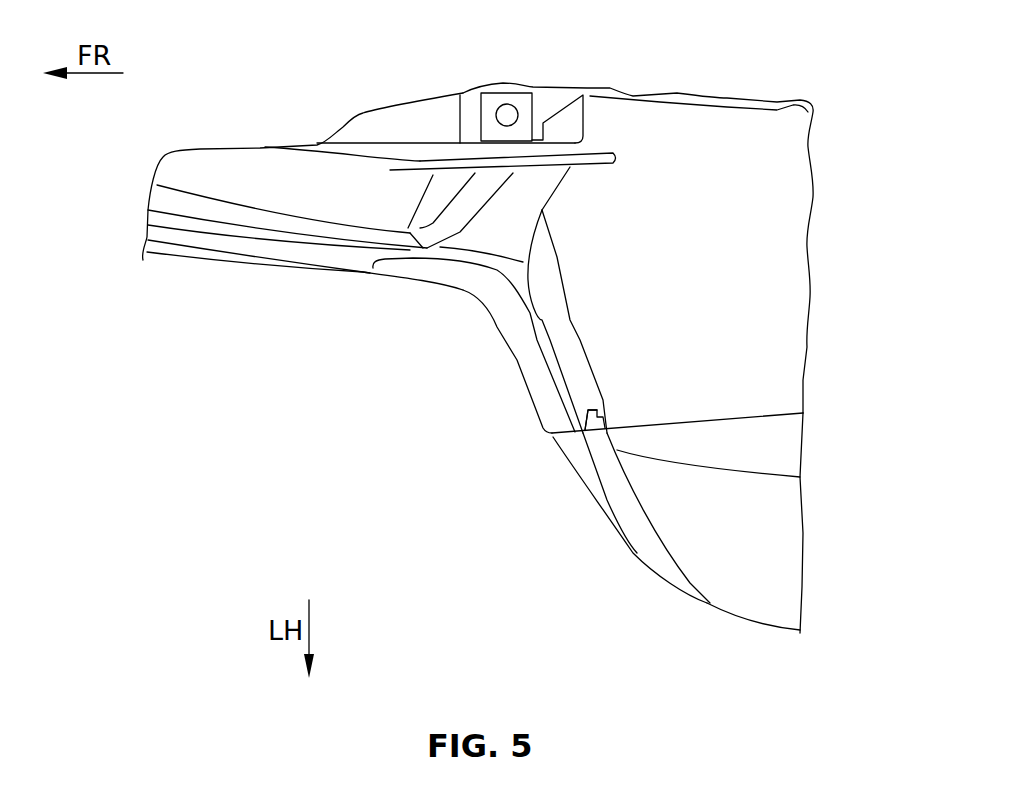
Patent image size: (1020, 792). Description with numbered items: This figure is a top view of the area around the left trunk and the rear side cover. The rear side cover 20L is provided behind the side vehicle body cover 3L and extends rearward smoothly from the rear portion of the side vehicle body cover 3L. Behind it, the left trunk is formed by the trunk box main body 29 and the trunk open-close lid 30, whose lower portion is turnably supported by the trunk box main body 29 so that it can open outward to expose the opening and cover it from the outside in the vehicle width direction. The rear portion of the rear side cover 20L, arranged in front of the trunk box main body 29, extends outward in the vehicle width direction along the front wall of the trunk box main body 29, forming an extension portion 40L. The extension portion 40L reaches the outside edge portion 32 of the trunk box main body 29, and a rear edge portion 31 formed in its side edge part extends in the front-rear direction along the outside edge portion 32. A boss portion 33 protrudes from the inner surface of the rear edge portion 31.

The side vehicle body cover 3L is at (275, 182).
The rear side cover 20L is at (373, 268).
The extension portion 40L is at (517, 357).
The trunk box main body 29 is at (768, 299).
The trunk open-close lid 30 is at (770, 543).
The rear edge portion 31 is at (583, 443).
The outside edge portion 32 is at (608, 422).
The boss portion 33 is at (600, 412).